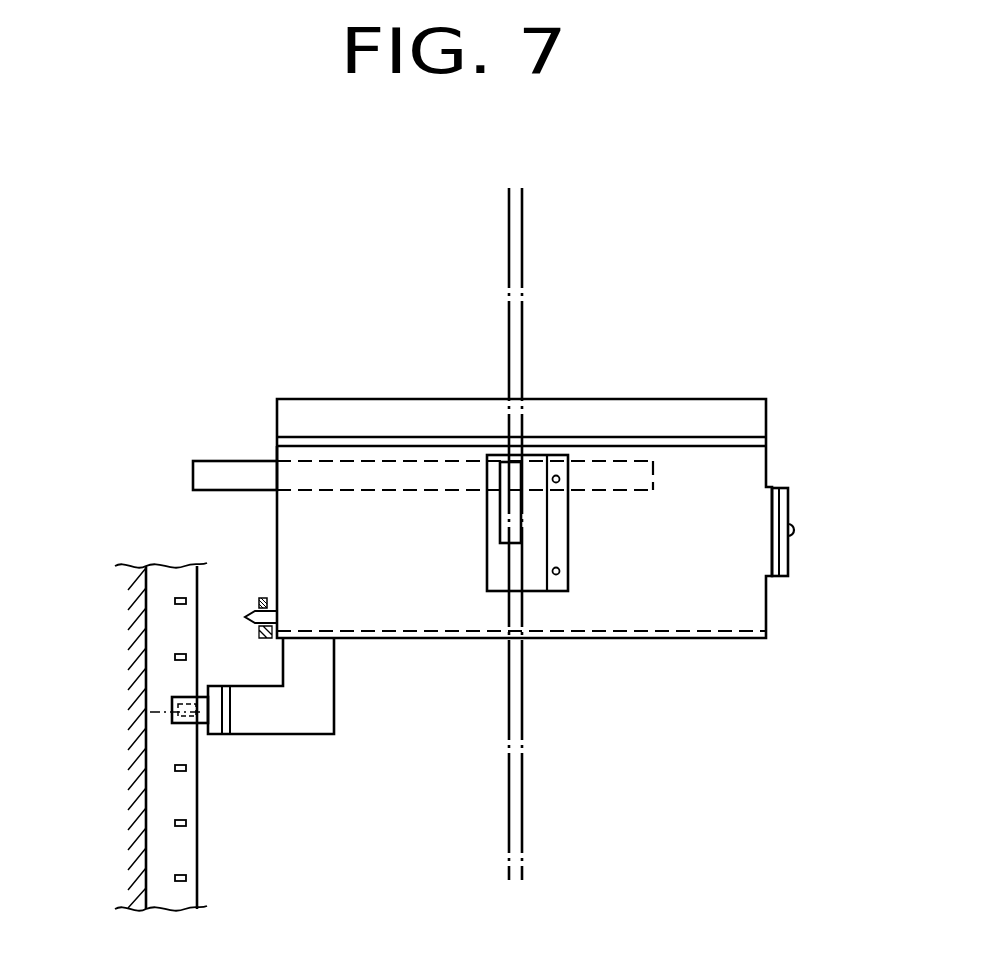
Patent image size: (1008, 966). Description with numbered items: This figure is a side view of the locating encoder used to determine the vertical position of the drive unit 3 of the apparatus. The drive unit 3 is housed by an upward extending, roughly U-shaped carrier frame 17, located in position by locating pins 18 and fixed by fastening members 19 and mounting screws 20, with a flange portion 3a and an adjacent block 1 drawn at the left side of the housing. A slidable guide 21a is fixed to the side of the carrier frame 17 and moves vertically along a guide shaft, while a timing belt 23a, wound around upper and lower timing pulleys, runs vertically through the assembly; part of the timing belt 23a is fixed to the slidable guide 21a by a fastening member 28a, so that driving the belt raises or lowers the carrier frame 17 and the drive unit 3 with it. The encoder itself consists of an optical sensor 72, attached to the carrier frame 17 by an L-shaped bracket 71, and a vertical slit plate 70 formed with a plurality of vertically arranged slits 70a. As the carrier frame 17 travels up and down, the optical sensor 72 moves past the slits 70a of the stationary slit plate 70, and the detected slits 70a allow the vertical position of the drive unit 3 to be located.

The block 1 is at (212, 461).
The drive unit 3 is at (377, 413).
The flange of housing 3a is at (277, 458).
The carrier frame 17 is at (698, 462).
The locating pins 18 is at (253, 612).
The fastening members 19 is at (790, 500).
The mounting screws 20 is at (795, 533).
The slidable guide 21a is at (533, 528).
The timing belt 23a is at (522, 278).
The fastening member 28a is at (505, 514).
The slit plate 70 is at (165, 623).
The slits 70a is at (175, 765).
The bracket 71 is at (310, 712).
The optical sensor 72 is at (205, 724).